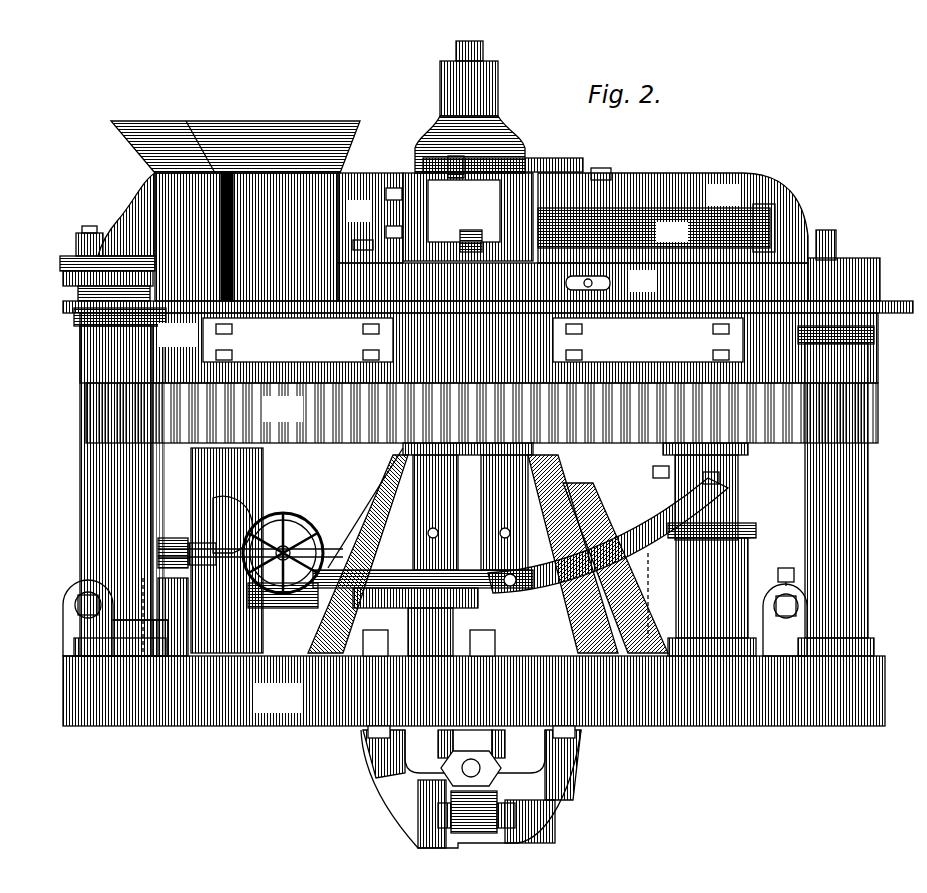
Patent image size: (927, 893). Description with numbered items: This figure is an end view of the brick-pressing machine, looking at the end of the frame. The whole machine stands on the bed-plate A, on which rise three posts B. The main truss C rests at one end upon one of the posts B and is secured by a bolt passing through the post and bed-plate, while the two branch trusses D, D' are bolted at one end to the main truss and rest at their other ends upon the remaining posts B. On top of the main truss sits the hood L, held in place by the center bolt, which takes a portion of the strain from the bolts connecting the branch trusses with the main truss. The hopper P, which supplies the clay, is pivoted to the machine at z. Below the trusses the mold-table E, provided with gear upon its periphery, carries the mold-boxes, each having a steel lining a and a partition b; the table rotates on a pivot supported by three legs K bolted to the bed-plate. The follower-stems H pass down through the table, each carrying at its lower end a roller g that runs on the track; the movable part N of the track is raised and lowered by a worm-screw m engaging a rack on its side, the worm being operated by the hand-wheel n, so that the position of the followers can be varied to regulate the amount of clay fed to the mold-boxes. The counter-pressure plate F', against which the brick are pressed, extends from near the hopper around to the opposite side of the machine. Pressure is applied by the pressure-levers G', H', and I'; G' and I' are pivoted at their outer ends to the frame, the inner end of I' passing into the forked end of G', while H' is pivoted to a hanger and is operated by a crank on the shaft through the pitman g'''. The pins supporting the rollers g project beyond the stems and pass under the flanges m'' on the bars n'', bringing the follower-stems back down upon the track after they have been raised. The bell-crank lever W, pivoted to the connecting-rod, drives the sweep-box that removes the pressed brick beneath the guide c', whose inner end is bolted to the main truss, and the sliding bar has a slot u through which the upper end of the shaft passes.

The bed-plate A is at (474, 691).
The posts B is at (474, 482).
The mold-table E is at (482, 413).
The counter-pressure plate F' is at (488, 342).
The hopper P is at (165, 180).
The hood L is at (498, 112).
The bell-crank lever W is at (560, 152).
The slot u is at (592, 162).
The main truss C is at (468, 208).
The branch truss D is at (370, 218).
The pivot of hopper z is at (360, 236).
The branch truss D' is at (709, 237).
The guide c' is at (656, 228).
The steel lining a is at (573, 282).
The partition b is at (558, 276).
The follower-stems H is at (453, 549).
The legs K is at (362, 592).
The movable part of track N is at (292, 515).
The hand-wheel n is at (250, 539).
The worm-screw m is at (187, 543).
The roller g is at (322, 528).
The pressure-lever G' is at (115, 617).
The pressure-lever I' is at (560, 589).
The flanges m'' is at (640, 530).
The bars n'' is at (669, 508).
The pressure-lever H' is at (471, 800).
The pitman g''' is at (449, 793).